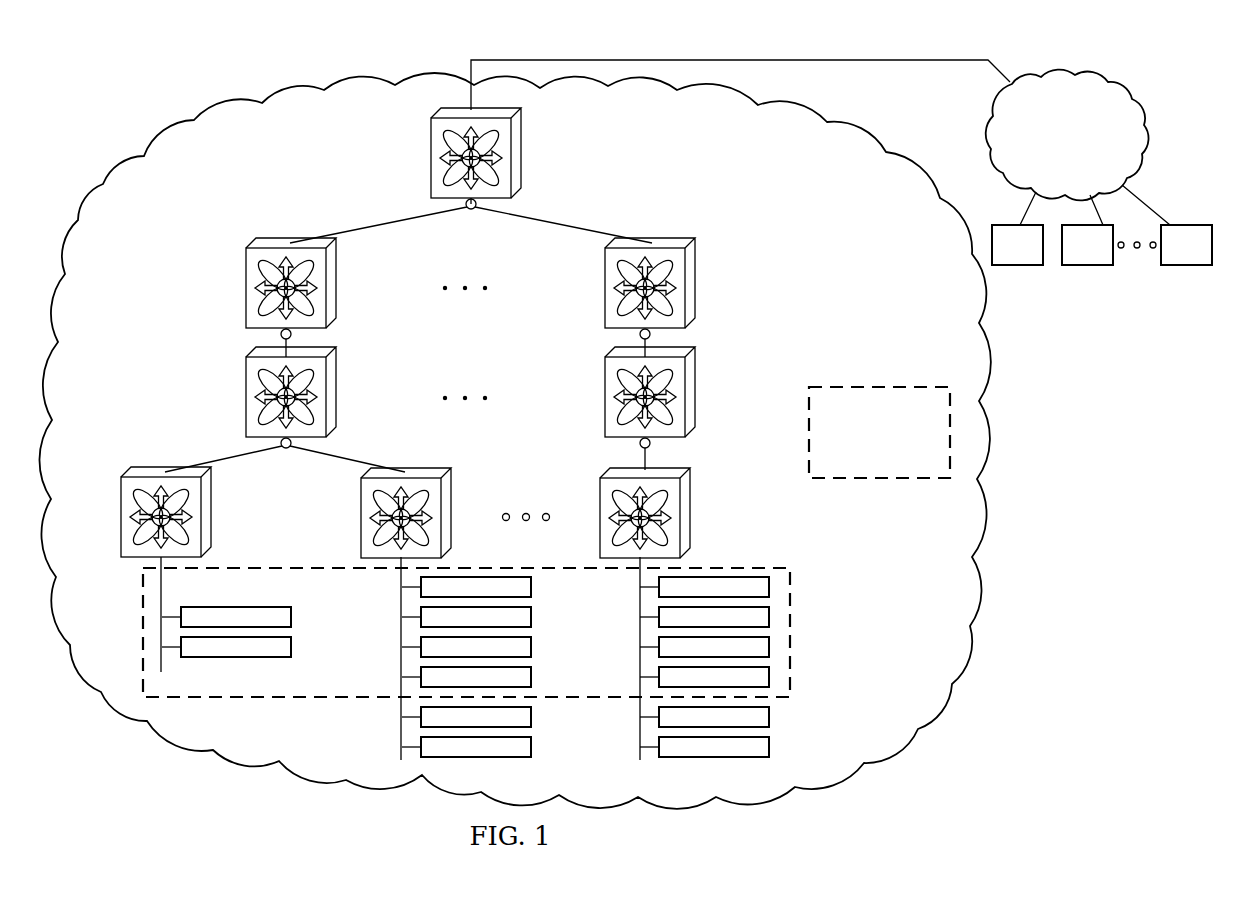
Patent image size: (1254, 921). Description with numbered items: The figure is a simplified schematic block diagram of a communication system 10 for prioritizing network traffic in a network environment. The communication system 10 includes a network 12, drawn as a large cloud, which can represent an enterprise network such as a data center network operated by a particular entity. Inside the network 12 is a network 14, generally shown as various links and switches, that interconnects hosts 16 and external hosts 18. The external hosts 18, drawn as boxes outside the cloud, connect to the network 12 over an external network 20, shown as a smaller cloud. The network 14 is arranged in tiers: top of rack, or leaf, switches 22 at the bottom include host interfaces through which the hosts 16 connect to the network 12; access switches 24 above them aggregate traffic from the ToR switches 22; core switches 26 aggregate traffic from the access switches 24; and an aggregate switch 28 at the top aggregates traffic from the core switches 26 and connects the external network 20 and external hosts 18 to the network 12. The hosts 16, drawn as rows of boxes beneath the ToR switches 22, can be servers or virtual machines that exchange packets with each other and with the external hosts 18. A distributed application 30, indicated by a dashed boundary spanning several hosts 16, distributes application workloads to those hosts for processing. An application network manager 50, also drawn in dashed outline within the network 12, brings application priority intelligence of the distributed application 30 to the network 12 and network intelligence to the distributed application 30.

The communication system 10 is at (118, 78).
The network 12 is at (998, 442).
The network 14 is at (852, 308).
The hosts 16 is at (507, 658).
The external hosts 18 is at (1090, 237).
The external network 20 is at (1065, 73).
The ToR switches 22 is at (416, 496).
The access switches 24 is at (471, 389).
The core switches 26 is at (466, 279).
The aggregate switches 28 is at (416, 143).
The distributed application 30 is at (306, 702).
The application network manager 50 is at (890, 387).